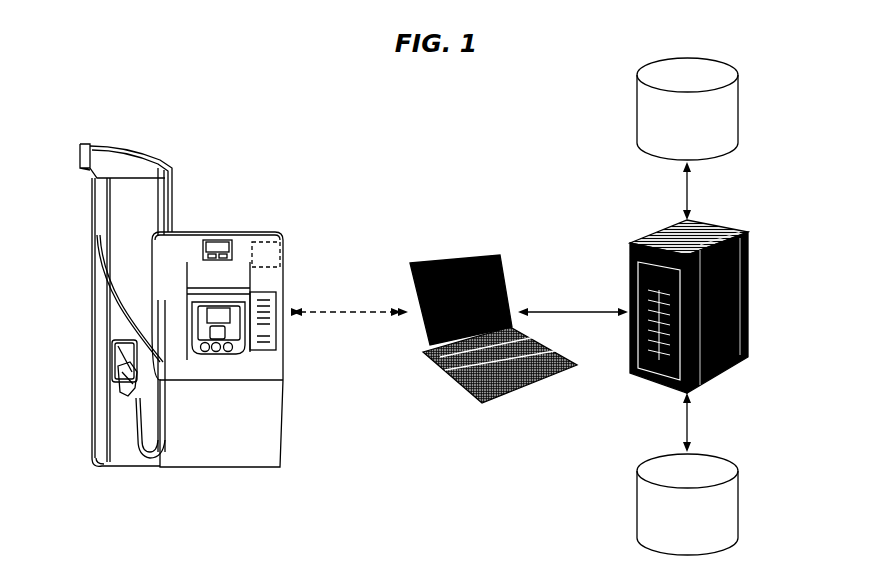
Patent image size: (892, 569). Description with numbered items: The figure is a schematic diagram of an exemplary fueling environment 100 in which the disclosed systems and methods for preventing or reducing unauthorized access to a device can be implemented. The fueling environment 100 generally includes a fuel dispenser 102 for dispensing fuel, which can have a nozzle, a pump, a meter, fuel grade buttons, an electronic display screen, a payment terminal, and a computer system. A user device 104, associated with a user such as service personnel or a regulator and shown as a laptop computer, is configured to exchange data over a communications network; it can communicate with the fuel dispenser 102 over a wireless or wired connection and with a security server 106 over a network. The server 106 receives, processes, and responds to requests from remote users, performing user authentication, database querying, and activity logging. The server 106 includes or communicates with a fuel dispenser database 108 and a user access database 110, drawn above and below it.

The fueling environment 100 is at (378, 147).
The fuel dispenser 102 is at (168, 253).
The user device 104 is at (453, 280).
The security server 106 is at (732, 283).
The fuel dispenser database 108 is at (687, 109).
The user access database 110 is at (687, 504).